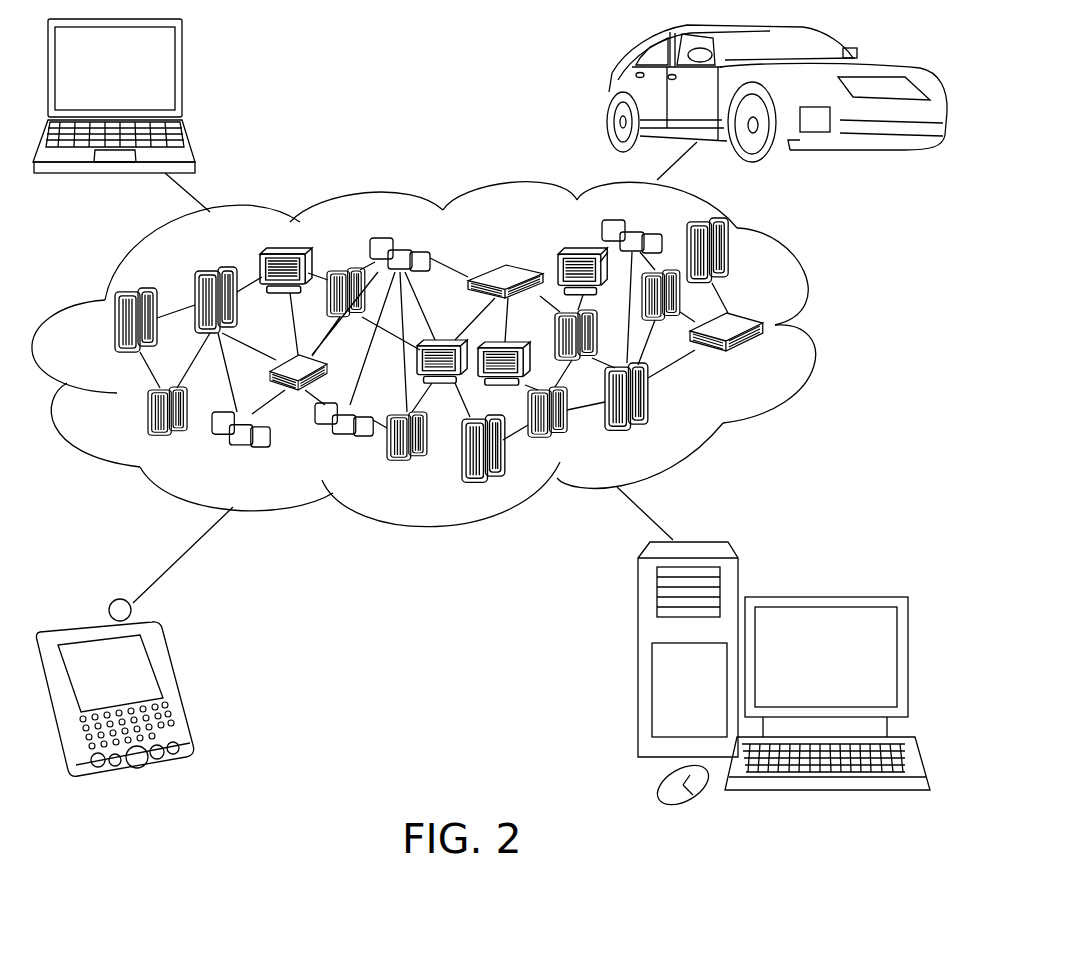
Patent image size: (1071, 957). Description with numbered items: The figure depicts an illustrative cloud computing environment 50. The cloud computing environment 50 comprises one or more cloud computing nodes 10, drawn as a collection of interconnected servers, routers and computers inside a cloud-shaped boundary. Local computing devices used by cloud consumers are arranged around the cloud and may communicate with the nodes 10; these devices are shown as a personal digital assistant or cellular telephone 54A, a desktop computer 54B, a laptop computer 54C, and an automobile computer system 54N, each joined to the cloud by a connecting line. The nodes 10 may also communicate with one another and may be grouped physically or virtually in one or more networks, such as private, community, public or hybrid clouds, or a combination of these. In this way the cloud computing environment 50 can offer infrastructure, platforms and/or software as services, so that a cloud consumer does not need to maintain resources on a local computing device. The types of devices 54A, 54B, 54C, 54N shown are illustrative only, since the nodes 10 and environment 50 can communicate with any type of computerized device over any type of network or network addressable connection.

The cloud computing node 10 is at (767, 358).
The cloud computing environment 50 is at (820, 327).
The personal digital assistant or cellular telephone 54A is at (172, 685).
The desktop computer 54B is at (822, 597).
The laptop computer 54C is at (183, 78).
The automobile computer system 54N is at (612, 90).